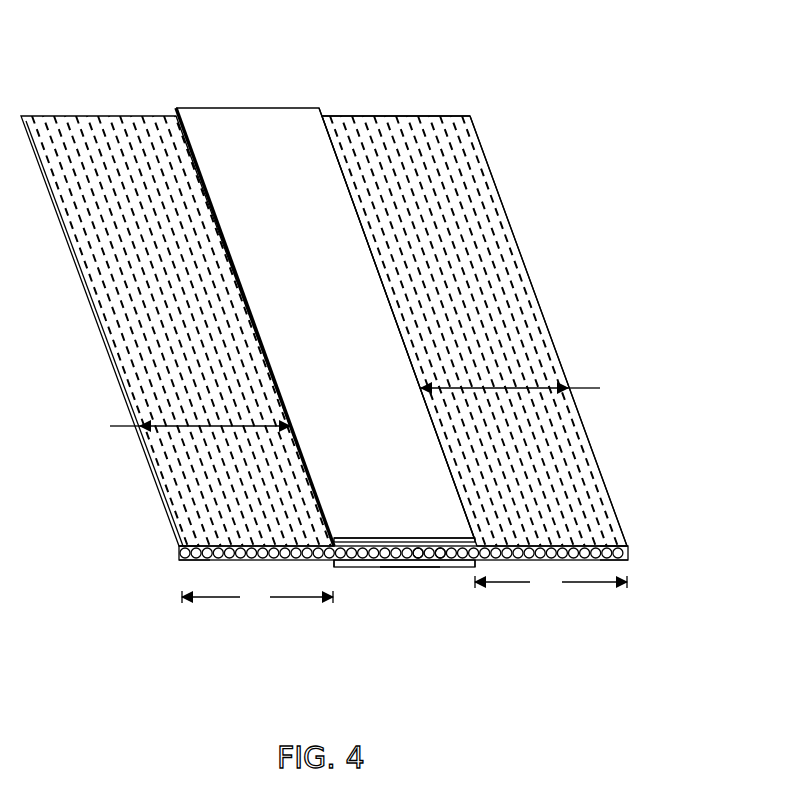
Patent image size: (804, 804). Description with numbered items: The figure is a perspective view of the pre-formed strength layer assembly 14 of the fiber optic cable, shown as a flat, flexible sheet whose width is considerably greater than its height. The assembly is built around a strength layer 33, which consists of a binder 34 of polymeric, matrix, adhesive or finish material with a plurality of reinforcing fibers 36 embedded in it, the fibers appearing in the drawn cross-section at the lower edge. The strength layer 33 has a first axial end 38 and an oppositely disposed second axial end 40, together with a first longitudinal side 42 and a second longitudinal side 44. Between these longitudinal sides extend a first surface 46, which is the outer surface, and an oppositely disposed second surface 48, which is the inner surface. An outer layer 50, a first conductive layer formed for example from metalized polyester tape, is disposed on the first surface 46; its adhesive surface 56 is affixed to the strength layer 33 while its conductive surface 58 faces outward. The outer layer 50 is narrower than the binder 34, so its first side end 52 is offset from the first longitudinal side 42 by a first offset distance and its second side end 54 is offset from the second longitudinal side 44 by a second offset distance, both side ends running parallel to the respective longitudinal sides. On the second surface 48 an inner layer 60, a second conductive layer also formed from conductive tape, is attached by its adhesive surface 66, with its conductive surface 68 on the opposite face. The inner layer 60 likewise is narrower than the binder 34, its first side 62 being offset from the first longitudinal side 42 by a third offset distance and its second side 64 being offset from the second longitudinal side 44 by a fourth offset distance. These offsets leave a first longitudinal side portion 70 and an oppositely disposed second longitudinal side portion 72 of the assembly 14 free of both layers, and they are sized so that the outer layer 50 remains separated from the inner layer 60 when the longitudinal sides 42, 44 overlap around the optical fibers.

The strength layer assembly 14 is at (136, 82).
The strength layer 33 is at (465, 103).
The binder 34 is at (622, 545).
The reinforcing fibers 36 is at (630, 560).
The first axial end 38 is at (395, 560).
The second axial end 40 is at (383, 115).
The first longitudinal side 42 is at (93, 330).
The second longitudinal side 44 is at (515, 237).
The first surface 46 is at (186, 547).
The second surface 48 is at (196, 561).
The outer layer 50 is at (337, 407).
The first side end 52 is at (254, 302).
The second side end 54 is at (381, 328).
The adhesive surface 56 is at (423, 552).
The conductive surface 58 is at (322, 297).
The inner layer 60 is at (371, 574).
The first side 62 is at (335, 569).
The second side 64 is at (473, 567).
The adhesive surface 66 is at (444, 553).
The conductive surface 68 is at (422, 567).
The first longitudinal side portion 70 is at (112, 287).
The second longitudinal side portion 72 is at (530, 362).